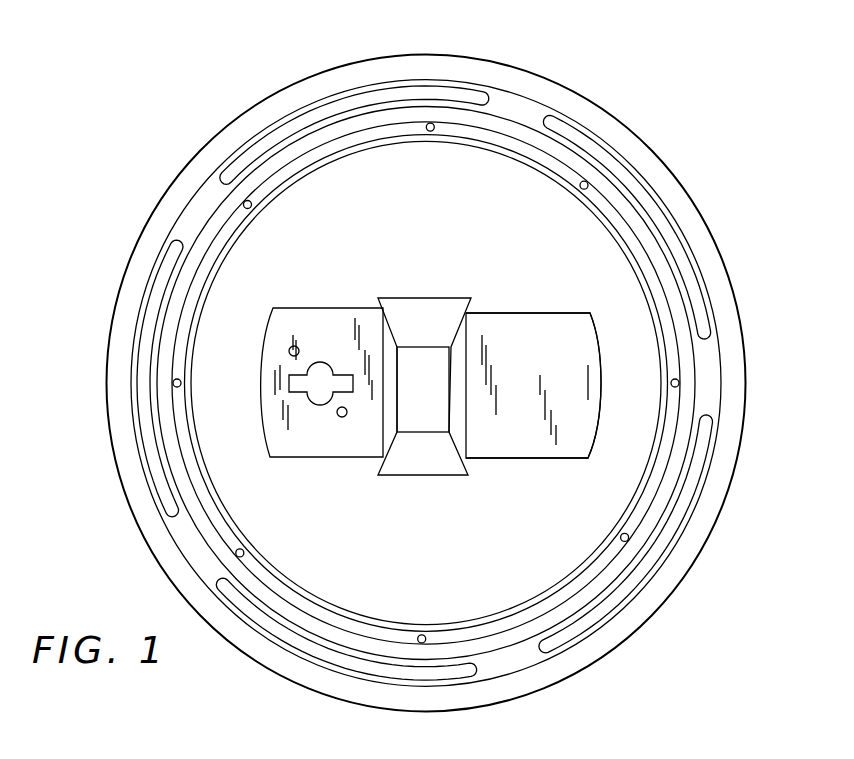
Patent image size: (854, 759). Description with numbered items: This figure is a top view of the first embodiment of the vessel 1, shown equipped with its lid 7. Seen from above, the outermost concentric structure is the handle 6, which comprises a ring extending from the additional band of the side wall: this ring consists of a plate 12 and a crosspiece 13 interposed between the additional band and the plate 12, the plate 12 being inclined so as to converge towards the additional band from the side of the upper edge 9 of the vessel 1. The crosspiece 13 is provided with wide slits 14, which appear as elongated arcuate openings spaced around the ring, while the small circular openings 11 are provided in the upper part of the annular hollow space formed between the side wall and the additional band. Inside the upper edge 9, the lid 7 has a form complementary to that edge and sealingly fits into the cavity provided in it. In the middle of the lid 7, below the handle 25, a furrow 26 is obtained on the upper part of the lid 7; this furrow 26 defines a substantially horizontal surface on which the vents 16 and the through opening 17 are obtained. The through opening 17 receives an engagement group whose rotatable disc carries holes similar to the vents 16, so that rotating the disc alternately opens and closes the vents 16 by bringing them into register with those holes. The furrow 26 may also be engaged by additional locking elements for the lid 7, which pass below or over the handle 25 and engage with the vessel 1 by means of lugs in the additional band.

The vessel 1 is at (133, 213).
The handle 6 is at (102, 418).
The lid 7 is at (430, 246).
The upper edge 9 is at (480, 383).
The openings 11 is at (588, 185).
The plate 12 is at (683, 207).
The crosspiece 13 is at (519, 110).
The wide slits 14 is at (375, 97).
The vents 16 is at (294, 346).
The through opening 17 is at (322, 380).
The handle 25 is at (436, 389).
The furrow 26 is at (545, 369).